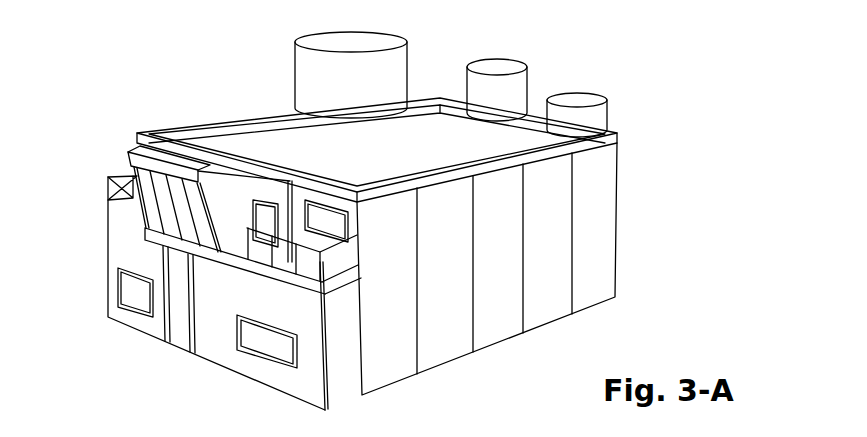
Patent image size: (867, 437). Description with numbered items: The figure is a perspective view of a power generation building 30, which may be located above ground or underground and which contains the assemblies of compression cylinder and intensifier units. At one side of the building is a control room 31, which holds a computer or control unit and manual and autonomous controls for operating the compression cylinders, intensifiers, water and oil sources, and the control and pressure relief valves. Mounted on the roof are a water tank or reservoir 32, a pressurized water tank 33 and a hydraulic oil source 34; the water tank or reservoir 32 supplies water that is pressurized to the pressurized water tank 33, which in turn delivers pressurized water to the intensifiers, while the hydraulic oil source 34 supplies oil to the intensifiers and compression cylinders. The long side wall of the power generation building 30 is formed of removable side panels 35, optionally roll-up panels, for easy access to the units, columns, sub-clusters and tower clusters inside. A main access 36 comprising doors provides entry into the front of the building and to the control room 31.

The power generation building 30 is at (706, 176).
The control room 31 is at (133, 158).
The water tank or reservoir 32 is at (398, 67).
The pressurized water tank 33 is at (520, 83).
The hydraulic oil source 34 is at (598, 113).
The removable side panels 35 is at (393, 373).
The main access 36 is at (180, 343).